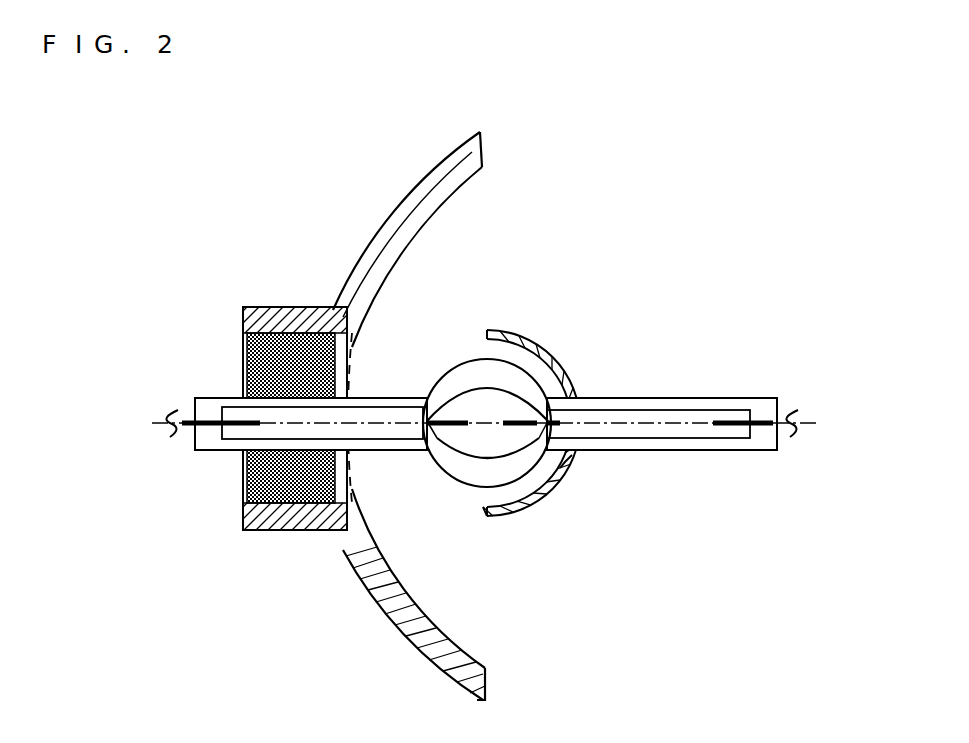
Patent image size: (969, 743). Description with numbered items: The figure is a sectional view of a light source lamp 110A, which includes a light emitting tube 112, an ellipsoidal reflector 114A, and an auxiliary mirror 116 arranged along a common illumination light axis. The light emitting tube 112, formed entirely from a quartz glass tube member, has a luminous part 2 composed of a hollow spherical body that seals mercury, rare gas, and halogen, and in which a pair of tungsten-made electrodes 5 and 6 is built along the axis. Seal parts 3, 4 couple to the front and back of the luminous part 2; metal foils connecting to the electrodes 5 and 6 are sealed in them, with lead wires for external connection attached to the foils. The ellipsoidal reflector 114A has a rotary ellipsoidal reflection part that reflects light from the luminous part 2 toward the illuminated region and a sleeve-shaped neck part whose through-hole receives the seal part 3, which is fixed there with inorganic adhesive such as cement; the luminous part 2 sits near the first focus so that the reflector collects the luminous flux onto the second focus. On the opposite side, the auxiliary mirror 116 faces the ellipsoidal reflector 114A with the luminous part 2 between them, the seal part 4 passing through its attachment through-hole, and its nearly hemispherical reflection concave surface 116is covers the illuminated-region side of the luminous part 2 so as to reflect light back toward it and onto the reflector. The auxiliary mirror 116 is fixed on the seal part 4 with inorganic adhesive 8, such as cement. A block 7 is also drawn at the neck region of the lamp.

The light source lamp 110A is at (777, 126).
The light emitting tube 112 is at (570, 300).
The ellipsoidal reflector 114A is at (385, 222).
The auxiliary mirror 116 is at (557, 362).
The reflection concave surface 116is is at (490, 512).
The luminous part 2 is at (442, 372).
The seal part 3 is at (222, 397).
The seal part 4 is at (683, 398).
The electrode 5 is at (453, 428).
The electrode 6 is at (500, 428).
The base block 7 is at (243, 345).
The inorganic adhesive 8 is at (570, 452).